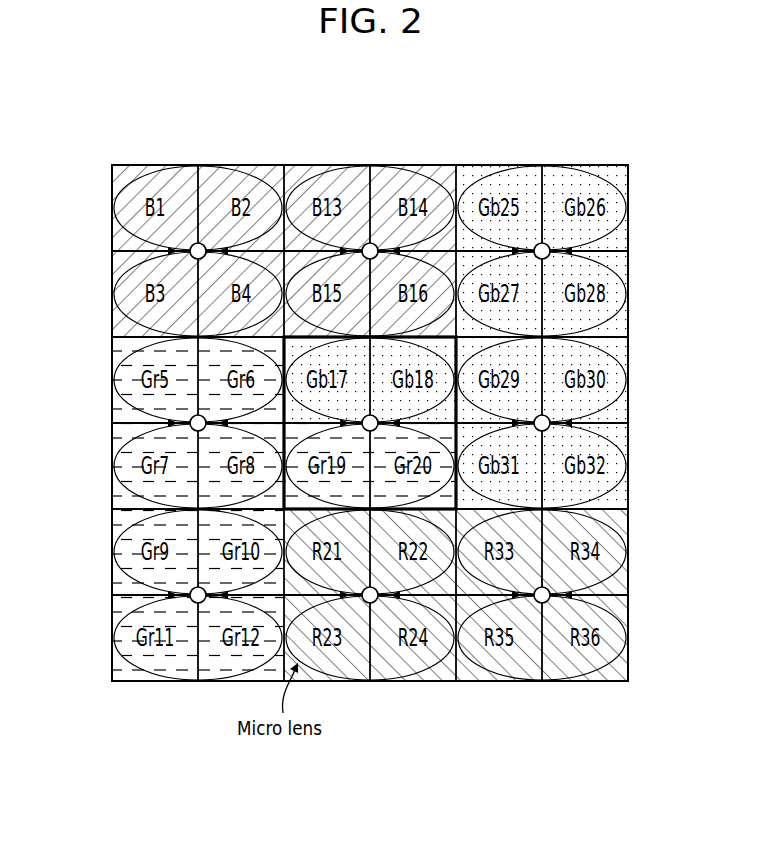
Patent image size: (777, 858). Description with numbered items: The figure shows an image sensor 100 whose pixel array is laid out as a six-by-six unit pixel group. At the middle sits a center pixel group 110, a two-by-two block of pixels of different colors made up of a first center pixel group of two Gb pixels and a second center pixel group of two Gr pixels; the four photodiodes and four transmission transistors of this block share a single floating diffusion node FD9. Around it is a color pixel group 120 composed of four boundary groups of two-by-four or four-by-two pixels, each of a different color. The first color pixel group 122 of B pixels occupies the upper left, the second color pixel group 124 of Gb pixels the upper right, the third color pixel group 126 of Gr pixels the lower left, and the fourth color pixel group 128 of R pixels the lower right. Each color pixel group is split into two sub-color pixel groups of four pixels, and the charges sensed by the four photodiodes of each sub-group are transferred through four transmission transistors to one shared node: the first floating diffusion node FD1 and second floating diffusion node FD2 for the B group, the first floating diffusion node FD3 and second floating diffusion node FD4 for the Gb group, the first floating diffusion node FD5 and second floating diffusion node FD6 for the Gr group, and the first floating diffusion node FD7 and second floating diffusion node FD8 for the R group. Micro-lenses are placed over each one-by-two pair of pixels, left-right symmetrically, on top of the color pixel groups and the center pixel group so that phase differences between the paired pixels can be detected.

The image sensor 100 is at (386, 116).
The center pixel group 110 is at (140, 352).
The color pixel group 120 is at (646, 151).
The first color pixel group 122 is at (124, 173).
The second color pixel group 124 is at (620, 349).
The third color pixel group 126 is at (120, 522).
The fourth color pixel group 128 is at (620, 521).
The first floating diffusion node FD1 is at (198, 243).
The second floating diffusion node FD2 is at (370, 243).
The first floating diffusion node FD3 is at (542, 243).
The second floating diffusion node FD4 is at (607, 420).
The first floating diffusion node FD5 is at (124, 421).
The second floating diffusion node FD6 is at (198, 603).
The first floating diffusion node FD7 is at (370, 603).
The second floating diffusion node FD8 is at (542, 603).
The floating diffusion node FD9 is at (606, 447).